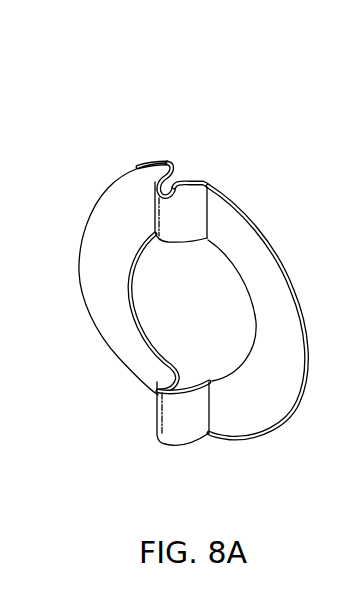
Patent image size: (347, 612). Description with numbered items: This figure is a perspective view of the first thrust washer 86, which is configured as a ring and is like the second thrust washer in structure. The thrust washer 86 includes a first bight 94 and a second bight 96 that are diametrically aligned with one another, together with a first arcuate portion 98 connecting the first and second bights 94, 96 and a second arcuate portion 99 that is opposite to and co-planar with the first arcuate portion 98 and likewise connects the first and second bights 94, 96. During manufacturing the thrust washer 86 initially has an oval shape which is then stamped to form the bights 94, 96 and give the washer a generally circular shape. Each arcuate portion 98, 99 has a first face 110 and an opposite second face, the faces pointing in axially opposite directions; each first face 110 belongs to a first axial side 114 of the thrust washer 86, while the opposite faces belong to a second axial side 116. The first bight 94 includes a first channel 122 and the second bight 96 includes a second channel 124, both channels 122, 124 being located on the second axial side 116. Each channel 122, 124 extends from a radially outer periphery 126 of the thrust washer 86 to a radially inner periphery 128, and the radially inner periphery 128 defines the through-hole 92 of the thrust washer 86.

The thrust washer 86 is at (201, 284).
The through-hole 92 is at (134, 302).
The first bight 94 is at (193, 238).
The second bight 96 is at (195, 402).
The first arcuate portion 98 is at (268, 310).
The second arcuate portion 99 is at (129, 349).
The first face 110 is at (200, 301).
The first axial side 114 is at (155, 202).
The second axial side 116 is at (170, 179).
The first channel 122 is at (186, 185).
The second channel 124 is at (171, 384).
The radially outer periphery 126 is at (281, 268).
The radially inner periphery 128 is at (255, 347).